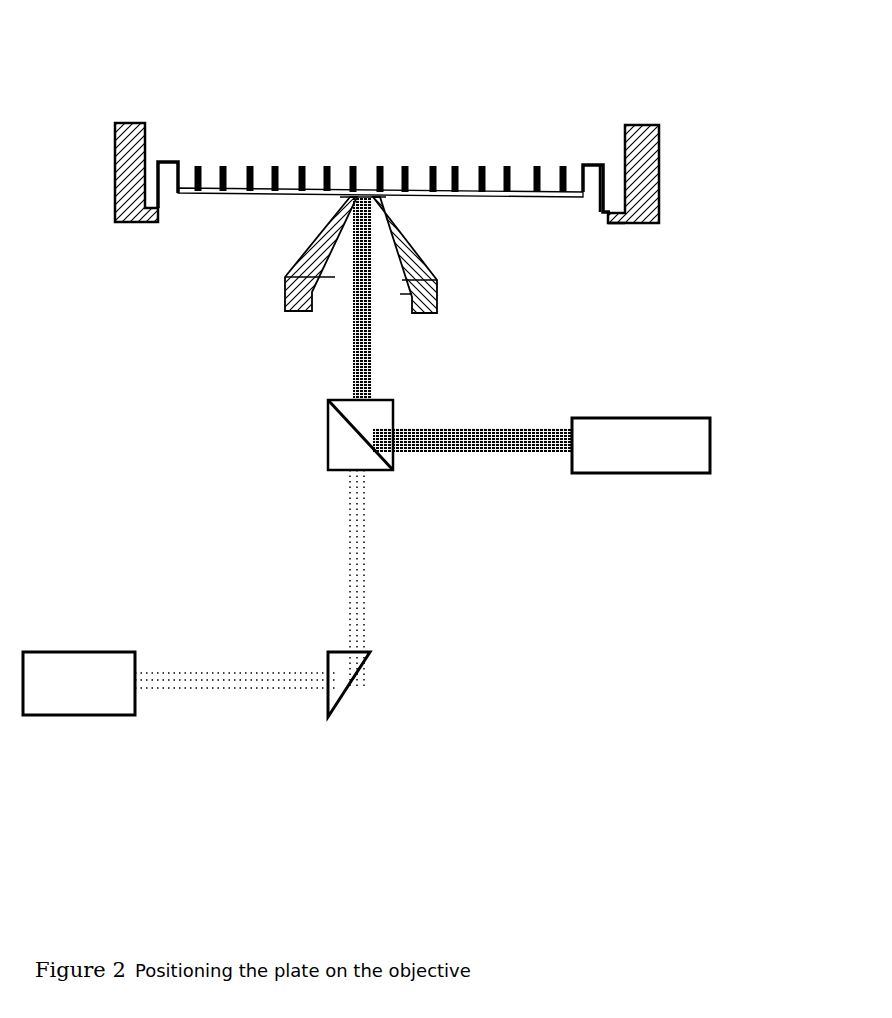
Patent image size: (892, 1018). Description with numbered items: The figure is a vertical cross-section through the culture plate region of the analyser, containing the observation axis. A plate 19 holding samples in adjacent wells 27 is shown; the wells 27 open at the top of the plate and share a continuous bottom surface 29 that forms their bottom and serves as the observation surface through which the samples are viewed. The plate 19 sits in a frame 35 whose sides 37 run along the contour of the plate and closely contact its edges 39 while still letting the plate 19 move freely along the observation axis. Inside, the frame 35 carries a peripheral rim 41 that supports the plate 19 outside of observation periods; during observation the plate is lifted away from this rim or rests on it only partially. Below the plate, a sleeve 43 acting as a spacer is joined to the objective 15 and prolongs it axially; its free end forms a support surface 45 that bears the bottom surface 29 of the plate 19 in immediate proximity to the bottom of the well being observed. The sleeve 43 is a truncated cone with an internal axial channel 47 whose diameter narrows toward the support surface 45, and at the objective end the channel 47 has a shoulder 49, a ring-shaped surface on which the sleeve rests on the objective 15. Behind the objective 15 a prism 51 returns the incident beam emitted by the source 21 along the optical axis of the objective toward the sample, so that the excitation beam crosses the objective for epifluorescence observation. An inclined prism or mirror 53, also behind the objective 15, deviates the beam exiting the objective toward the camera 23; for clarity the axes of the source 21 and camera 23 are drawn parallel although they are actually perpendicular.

The objective 15 is at (319, 298).
The plate 19 is at (380, 160).
The source 21 is at (541, 433).
The camera 23 is at (179, 673).
The wells 27 is at (316, 147).
The continuous bottom surface 29 is at (205, 198).
The frame 35 is at (112, 172).
The sides 37 is at (646, 181).
The edges 39 is at (611, 173).
The peripheral rim 41 is at (608, 226).
The sleeve 43 is at (422, 255).
The support surface 45 is at (346, 199).
The axial channel 47 is at (346, 263).
The shoulder 49 is at (410, 300).
The prism 51 is at (337, 447).
The inclined prism or mirror 53 is at (376, 593).